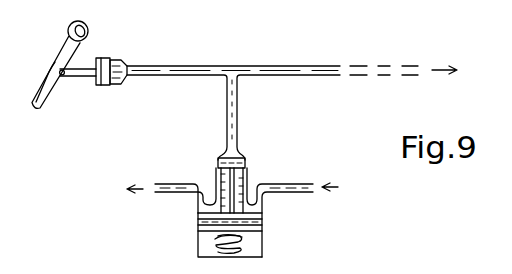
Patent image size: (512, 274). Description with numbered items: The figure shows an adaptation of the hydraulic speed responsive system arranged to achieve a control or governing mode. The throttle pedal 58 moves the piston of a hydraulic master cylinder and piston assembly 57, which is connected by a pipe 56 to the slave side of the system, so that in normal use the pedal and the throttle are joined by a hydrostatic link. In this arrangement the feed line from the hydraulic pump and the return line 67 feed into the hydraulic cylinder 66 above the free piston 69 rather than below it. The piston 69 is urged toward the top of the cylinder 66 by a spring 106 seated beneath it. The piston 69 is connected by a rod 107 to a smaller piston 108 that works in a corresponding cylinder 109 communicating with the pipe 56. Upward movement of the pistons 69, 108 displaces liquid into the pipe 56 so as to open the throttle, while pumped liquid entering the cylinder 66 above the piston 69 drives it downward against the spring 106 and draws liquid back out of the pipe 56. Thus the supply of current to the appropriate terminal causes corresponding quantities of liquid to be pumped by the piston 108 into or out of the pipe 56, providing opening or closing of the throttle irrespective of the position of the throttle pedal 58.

The pipe 56 is at (312, 65).
The hydraulic master cylinder and piston assembly 57 is at (122, 58).
The throttle pedal 58 is at (65, 43).
The hydraulic cylinder 66 is at (262, 212).
The return pipe 67 is at (167, 183).
The free piston 69 is at (262, 233).
The spring 106 is at (215, 244).
The rod 107 is at (235, 183).
The smaller piston 108 is at (241, 159).
The corresponding cylinder 109 is at (219, 173).